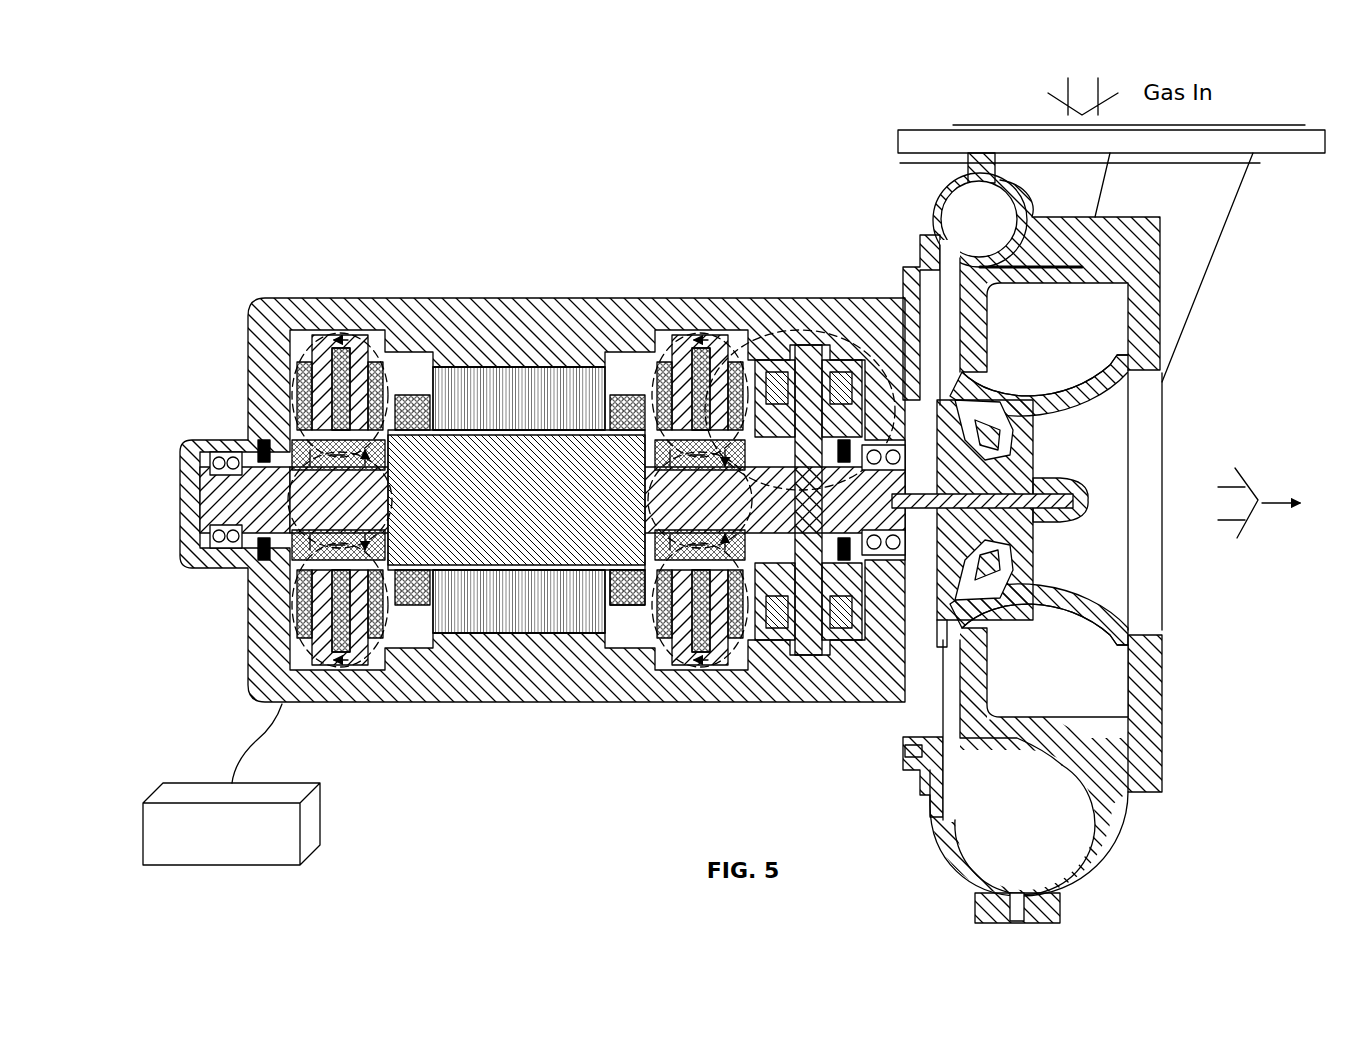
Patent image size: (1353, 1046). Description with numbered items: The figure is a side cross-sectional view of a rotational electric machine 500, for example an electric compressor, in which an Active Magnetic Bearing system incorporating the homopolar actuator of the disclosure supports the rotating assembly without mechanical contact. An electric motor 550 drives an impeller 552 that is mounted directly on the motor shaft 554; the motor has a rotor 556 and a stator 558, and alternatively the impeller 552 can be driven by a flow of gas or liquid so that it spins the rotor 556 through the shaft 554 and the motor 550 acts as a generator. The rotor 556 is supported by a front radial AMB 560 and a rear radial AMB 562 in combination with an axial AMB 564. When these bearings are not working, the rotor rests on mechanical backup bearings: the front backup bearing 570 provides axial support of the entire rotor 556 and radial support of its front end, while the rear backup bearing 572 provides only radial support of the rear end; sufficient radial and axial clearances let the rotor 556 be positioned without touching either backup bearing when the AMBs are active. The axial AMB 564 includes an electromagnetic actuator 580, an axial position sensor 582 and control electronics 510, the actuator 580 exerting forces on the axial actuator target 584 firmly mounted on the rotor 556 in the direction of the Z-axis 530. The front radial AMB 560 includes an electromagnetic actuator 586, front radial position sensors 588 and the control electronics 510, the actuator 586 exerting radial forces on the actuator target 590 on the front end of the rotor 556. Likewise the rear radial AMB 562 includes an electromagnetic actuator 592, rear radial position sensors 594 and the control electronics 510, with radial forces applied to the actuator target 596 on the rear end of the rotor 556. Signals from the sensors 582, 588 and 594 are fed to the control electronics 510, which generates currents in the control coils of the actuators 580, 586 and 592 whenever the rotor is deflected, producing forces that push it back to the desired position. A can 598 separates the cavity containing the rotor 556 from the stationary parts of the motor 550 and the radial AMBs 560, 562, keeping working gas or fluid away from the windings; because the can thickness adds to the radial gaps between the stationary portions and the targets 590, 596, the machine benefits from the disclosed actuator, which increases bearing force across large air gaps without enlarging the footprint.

The rotational electric machine 500 is at (320, 210).
The control electronics 510 is at (205, 865).
The Z-axis 530 is at (1278, 503).
The electric motor 550 is at (450, 400).
The impeller 552 is at (1020, 482).
The motor shaft 554 is at (935, 520).
The rotor 556 is at (530, 560).
The stator 558 is at (462, 455).
The front radial AMB 560 is at (660, 560).
The rear radial AMB 562 is at (282, 704).
The axial AMB 564 is at (814, 340).
The front backup bearing 570 is at (882, 560).
The rear backup bearing 572 is at (180, 500).
The electromagnetic actuator 580 is at (826, 345).
The axial position sensor 582 is at (913, 407).
The axial actuator target 584 is at (805, 658).
The electromagnetic actuator 586 is at (690, 335).
The front radial position sensors 588 is at (848, 560).
The actuator target 590 is at (640, 523).
The electromagnetic actuator 592 is at (330, 330).
The rear radial position sensors 594 is at (262, 466).
The actuator target 596 is at (250, 615).
The can 598 is at (600, 592).